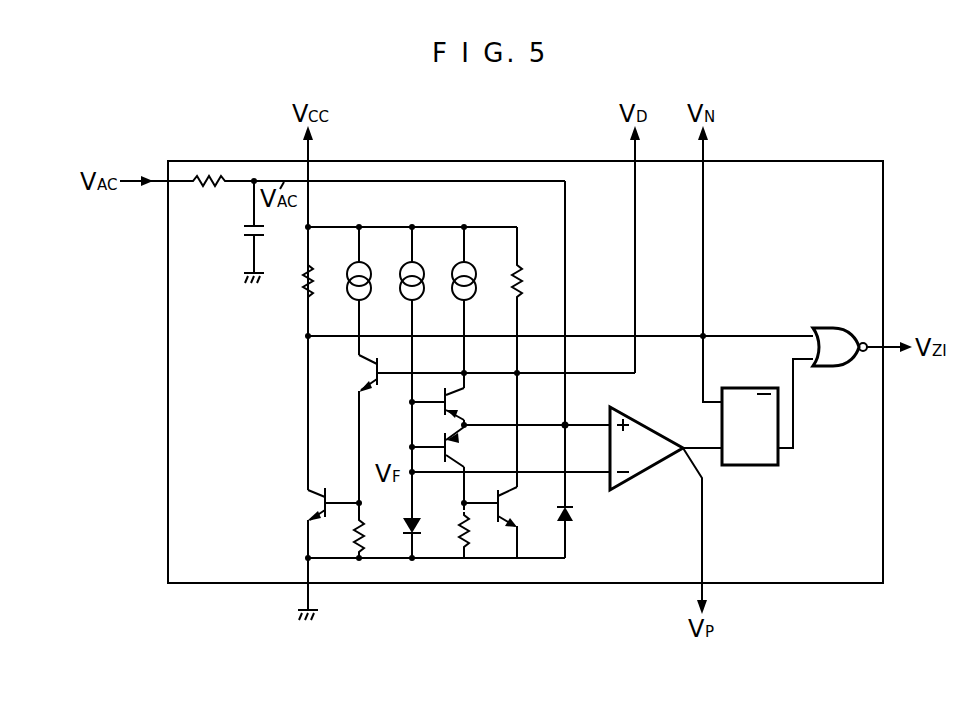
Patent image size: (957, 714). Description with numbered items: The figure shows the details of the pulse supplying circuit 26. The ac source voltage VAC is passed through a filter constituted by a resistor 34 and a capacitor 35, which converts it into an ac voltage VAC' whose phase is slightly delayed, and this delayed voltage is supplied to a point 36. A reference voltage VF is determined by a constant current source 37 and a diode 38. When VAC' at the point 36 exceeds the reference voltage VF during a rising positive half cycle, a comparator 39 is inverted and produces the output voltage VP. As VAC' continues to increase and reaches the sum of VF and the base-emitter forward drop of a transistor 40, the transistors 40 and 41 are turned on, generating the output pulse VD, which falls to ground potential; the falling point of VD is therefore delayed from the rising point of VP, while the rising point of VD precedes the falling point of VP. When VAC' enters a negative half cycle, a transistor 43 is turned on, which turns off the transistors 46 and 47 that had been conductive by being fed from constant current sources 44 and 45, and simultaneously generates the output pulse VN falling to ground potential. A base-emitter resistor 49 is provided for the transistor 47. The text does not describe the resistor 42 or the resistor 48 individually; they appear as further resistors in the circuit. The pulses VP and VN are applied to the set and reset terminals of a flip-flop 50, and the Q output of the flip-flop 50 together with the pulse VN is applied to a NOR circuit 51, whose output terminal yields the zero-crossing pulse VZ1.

The pulse supplying circuit 26 is at (826, 583).
The resistor 34 is at (200, 187).
The capacitor 35 is at (247, 238).
The point 36 is at (566, 423).
The constant current source 37 is at (419, 273).
The diode 38 is at (404, 523).
The comparator 39 is at (655, 431).
The transistor 40 is at (454, 448).
The transistor 41 is at (503, 505).
The resistor 42 is at (521, 284).
The transistor 43 is at (454, 404).
The constant current source 44 is at (470, 274).
The constant current source 45 is at (366, 273).
The transistor 46 is at (375, 373).
The transistor 47 is at (322, 500).
The resistor 48 is at (311, 275).
The base-emitter resistor 49 is at (356, 534).
The flip-flop 50 is at (758, 467).
The NOR circuit 51 is at (839, 327).